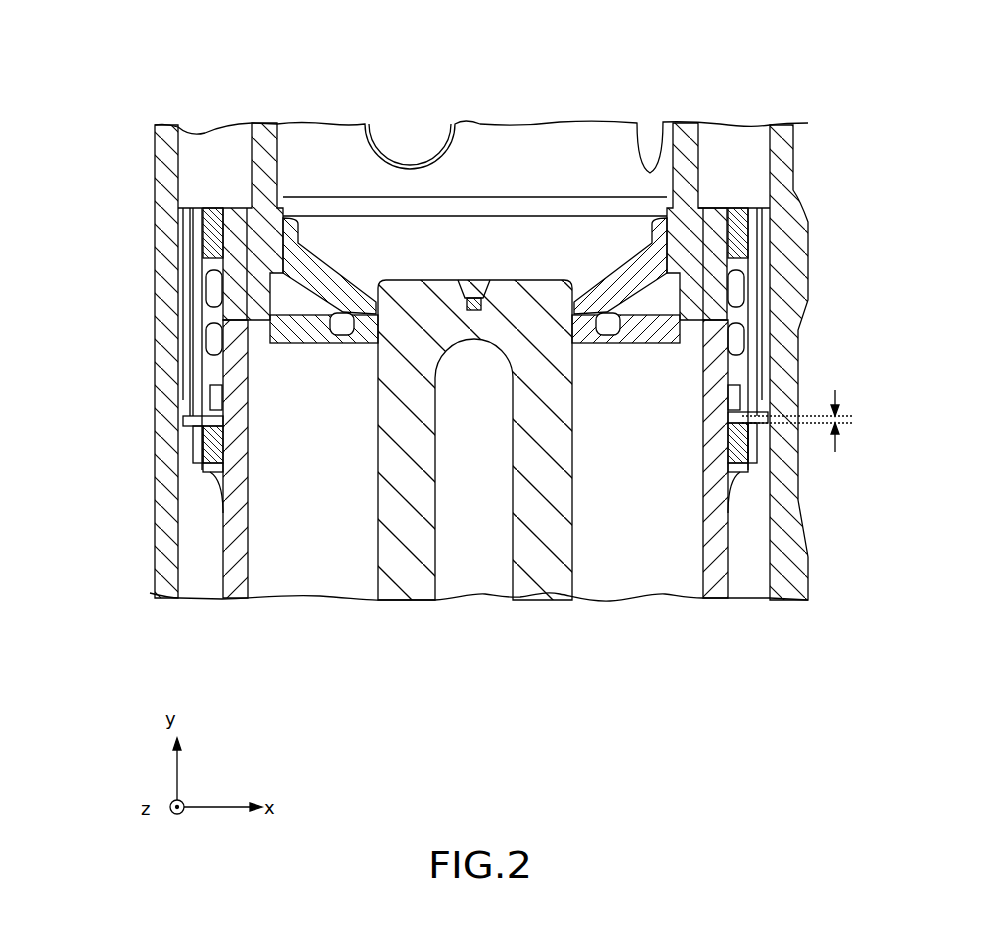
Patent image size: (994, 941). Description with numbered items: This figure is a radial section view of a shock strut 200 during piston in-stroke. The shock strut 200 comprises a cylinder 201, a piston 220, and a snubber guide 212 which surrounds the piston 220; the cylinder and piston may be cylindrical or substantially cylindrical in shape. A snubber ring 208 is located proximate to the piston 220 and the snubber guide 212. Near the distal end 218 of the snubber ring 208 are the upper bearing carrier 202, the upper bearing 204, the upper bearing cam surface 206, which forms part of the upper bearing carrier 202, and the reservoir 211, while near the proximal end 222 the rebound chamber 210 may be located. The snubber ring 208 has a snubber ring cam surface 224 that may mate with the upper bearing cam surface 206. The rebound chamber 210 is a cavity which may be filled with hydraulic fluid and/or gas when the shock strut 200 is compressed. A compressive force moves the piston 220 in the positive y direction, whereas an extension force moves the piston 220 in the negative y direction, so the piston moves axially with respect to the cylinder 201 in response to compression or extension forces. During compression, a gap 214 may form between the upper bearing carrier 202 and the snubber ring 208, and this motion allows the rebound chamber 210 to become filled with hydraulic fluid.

The shock strut 200 is at (657, 77).
The cylinder 201 is at (157, 222).
The upper bearing carrier 202 is at (778, 212).
The upper bearing 204 is at (776, 320).
The upper bearing cam surface 206 is at (765, 405).
The snubber ring 208 is at (767, 456).
The rebound chamber 210 is at (752, 540).
The reservoir 211 is at (750, 136).
The snubber guide 212 is at (710, 486).
The gap 214 is at (798, 435).
The distal end 218 is at (213, 430).
The piston 220 is at (232, 592).
The proximal end 222 is at (207, 468).
The snubber ring cam surface 224 is at (185, 412).